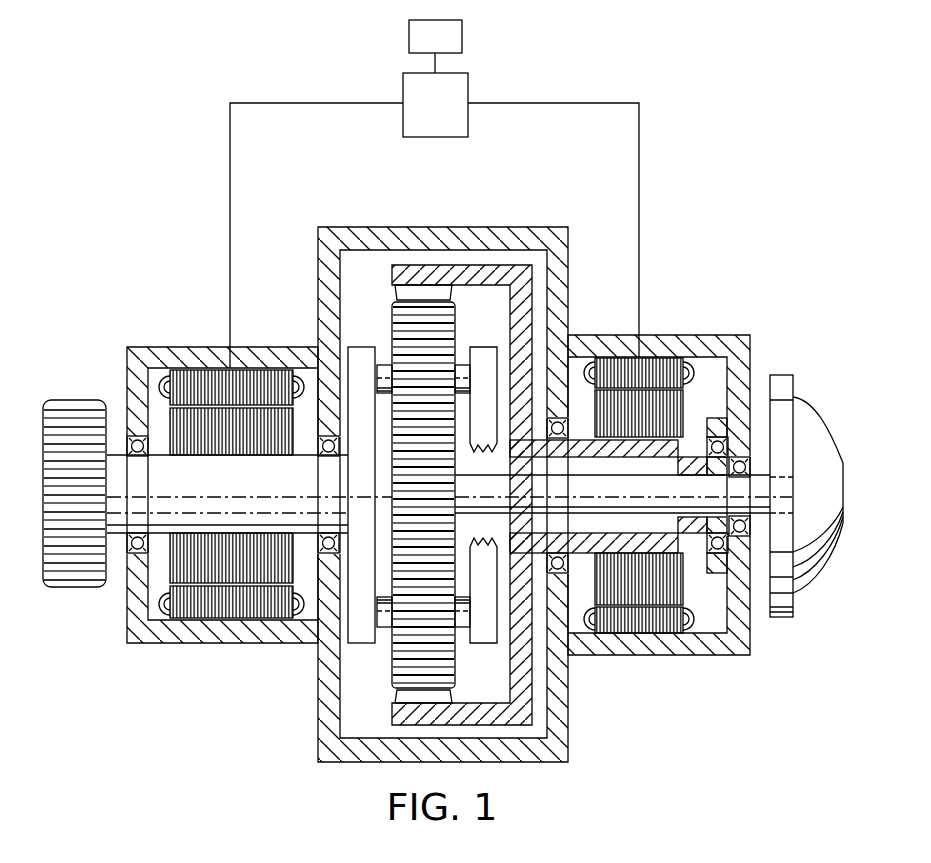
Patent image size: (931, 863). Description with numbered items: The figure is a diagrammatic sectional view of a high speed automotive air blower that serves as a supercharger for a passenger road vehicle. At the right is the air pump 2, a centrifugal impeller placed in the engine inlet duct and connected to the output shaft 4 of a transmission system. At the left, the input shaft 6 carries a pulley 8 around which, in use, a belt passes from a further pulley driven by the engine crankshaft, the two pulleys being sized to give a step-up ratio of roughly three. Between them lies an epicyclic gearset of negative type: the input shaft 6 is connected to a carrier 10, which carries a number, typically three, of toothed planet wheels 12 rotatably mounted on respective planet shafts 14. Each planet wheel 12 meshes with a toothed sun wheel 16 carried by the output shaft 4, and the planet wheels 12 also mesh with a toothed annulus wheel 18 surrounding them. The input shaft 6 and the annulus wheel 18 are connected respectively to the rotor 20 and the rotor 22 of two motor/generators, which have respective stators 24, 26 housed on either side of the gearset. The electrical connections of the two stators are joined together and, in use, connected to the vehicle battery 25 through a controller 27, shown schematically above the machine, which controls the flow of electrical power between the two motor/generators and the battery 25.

The air pump 2 is at (787, 618).
The output shaft 4 is at (760, 488).
The input shaft 6 is at (249, 494).
The pulley 8 is at (73, 588).
The carrier 10 is at (362, 636).
The planet wheels 12 is at (455, 672).
The planet shafts 14 is at (388, 367).
The sun wheel 16 is at (400, 480).
The annulus wheel 18 is at (463, 280).
The rotor 20 is at (227, 443).
The rotor 22 is at (652, 400).
The stator 24 is at (213, 373).
The battery 25 is at (435, 46).
The stator 26 is at (620, 362).
The controller 27 is at (435, 105).